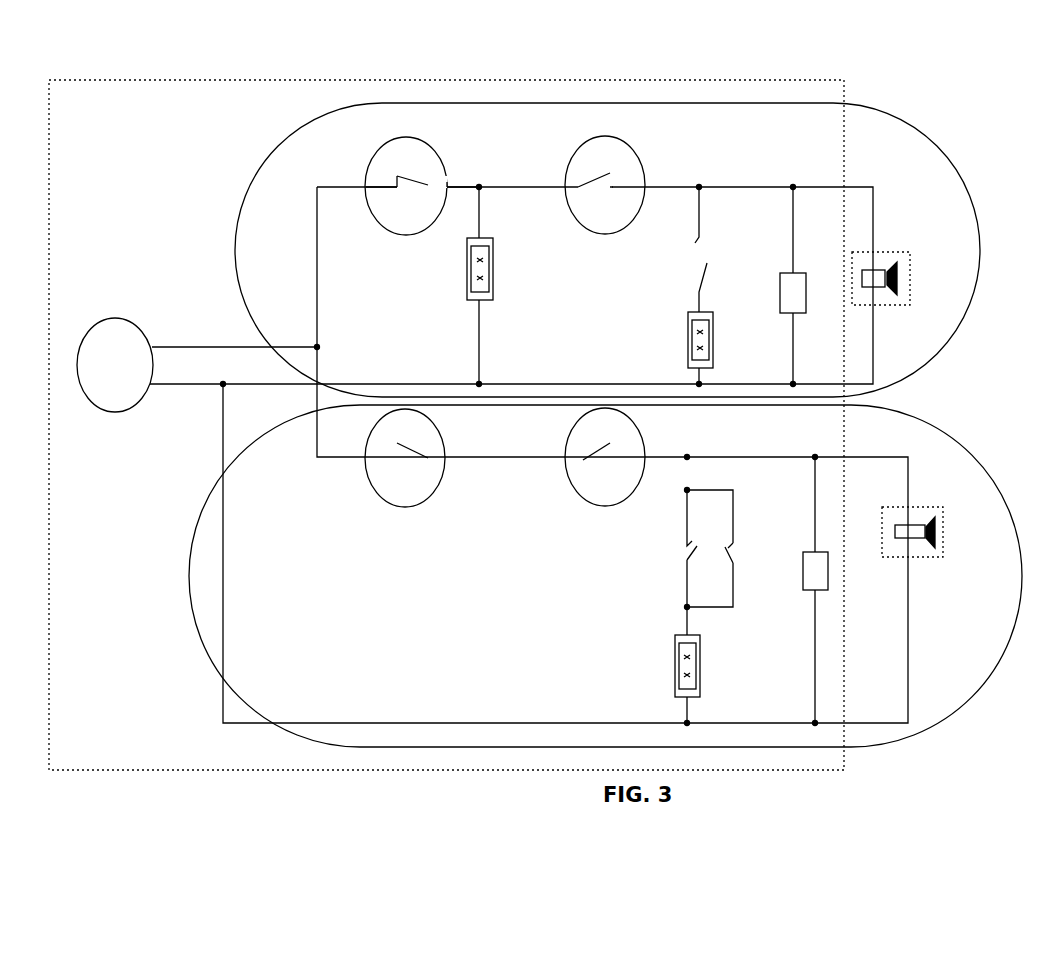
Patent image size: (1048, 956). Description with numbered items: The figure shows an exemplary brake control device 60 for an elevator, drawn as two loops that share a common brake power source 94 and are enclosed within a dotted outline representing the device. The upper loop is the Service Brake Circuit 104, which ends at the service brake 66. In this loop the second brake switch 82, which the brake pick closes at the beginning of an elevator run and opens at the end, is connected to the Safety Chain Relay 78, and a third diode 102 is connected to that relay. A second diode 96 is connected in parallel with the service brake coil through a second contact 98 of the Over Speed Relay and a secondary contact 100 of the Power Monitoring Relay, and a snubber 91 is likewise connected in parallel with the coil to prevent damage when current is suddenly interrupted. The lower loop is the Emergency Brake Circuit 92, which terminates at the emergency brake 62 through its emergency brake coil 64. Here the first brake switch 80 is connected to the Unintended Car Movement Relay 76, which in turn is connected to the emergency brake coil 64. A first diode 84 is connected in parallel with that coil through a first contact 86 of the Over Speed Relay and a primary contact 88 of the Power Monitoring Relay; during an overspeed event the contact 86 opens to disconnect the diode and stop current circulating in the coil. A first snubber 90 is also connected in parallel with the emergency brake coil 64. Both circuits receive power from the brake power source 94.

The brake control device 60 is at (858, 84).
The Service Brake Circuit 104 is at (947, 164).
The Emergency Brake Circuit 92 is at (930, 425).
The brake power source 94 is at (130, 326).
The second brake switch 82 is at (418, 163).
The Safety Chain Relay 78 is at (617, 161).
The first brake switch 80 is at (382, 492).
The Unintended Car Movement (UCM) Relay 76 is at (585, 478).
The third diode 102 is at (467, 262).
The second diode 96 is at (688, 329).
The first diode 84 is at (675, 650).
The secondary contact of the Power Monitoring Relay 100 is at (703, 229).
The second contact of the Over Speed Relay 98 is at (703, 270).
The snubber 91 is at (797, 300).
The first snubber 90 is at (800, 592).
The primary contact of the Power Monitoring Relay 88 is at (880, 265).
The service brake 66 is at (905, 285).
The first contact of the Over Speed Relay 86 is at (730, 550).
The emergency brake coil 64 is at (915, 525).
The emergency brake 62 is at (940, 532).